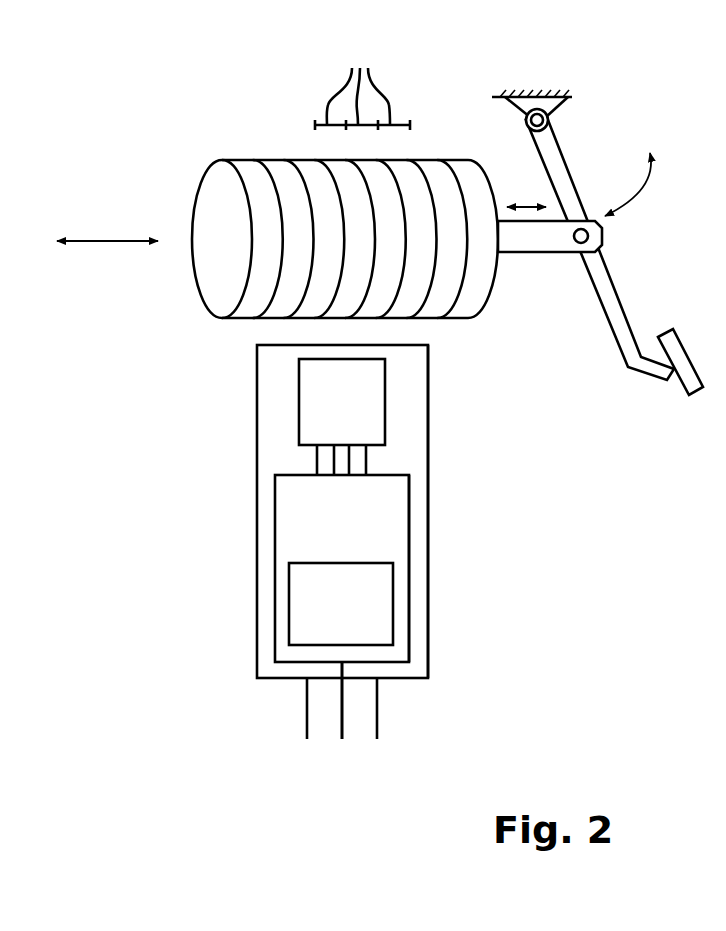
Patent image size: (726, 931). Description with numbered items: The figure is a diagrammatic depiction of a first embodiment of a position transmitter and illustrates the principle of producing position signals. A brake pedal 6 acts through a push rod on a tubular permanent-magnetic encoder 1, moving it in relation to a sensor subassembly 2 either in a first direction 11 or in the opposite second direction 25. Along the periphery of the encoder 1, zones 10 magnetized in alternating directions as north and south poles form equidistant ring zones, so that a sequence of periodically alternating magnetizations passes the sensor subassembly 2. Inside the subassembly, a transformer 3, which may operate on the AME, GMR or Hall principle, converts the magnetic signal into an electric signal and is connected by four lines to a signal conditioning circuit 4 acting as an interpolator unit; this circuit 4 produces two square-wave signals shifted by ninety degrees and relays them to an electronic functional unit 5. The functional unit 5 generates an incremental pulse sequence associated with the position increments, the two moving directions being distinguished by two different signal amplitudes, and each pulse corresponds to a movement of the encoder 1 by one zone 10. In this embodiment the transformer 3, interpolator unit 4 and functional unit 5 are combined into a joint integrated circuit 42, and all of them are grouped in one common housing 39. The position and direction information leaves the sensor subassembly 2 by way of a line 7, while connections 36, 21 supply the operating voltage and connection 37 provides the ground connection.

The magnetic encoder 1 is at (252, 178).
The zones 10 is at (362, 84).
The first direction 11 is at (107, 222).
The second direction 25 is at (115, 222).
The brake pedal 6 is at (553, 158).
The sensor subassembly 2 is at (256, 418).
The transformer 3 is at (353, 387).
The common housing 39 is at (428, 441).
The signal conditioning circuit 4 is at (383, 516).
The joint integrated circuit 42 is at (409, 580).
The functional unit 5 is at (358, 612).
The line 7 is at (307, 722).
The connection for the supply voltage 21 is at (339, 726).
The connection for the supply voltage 36 is at (342, 712).
The ground connection 37 is at (377, 718).